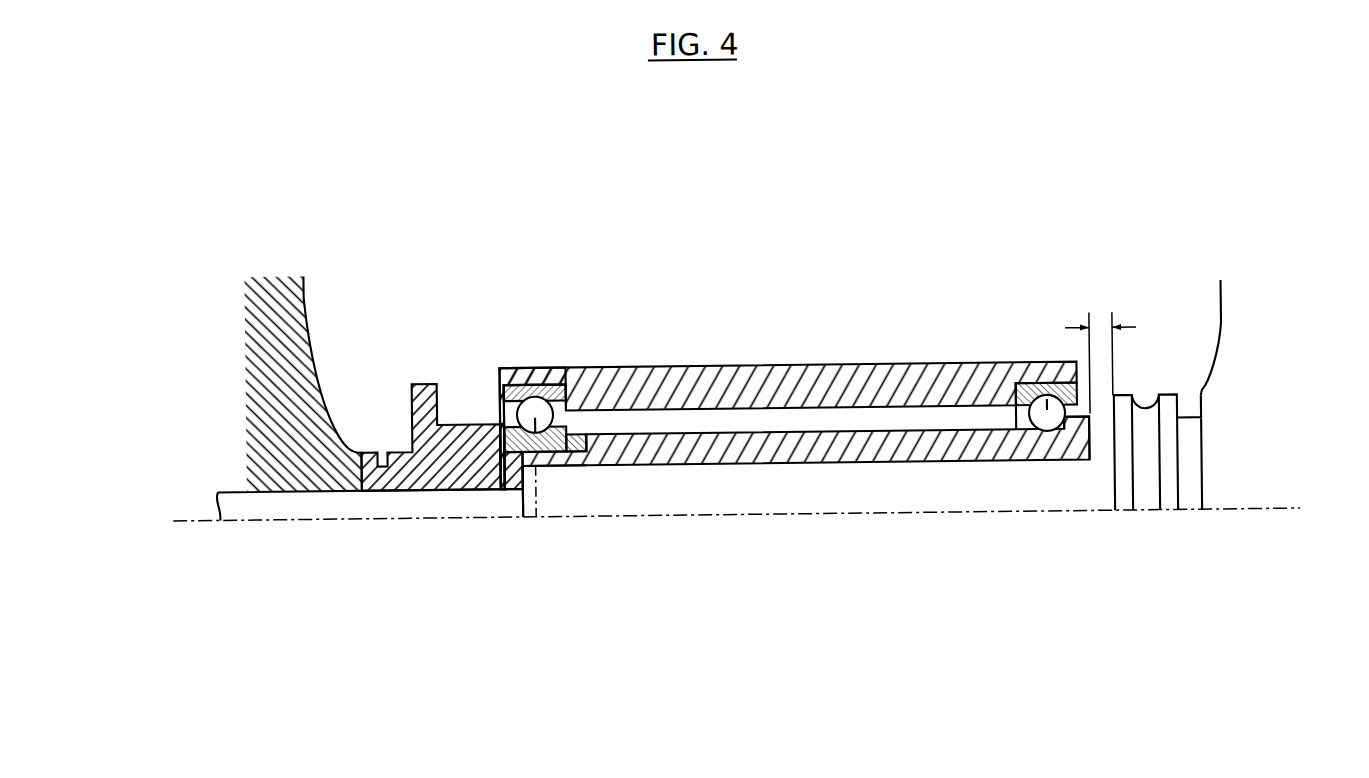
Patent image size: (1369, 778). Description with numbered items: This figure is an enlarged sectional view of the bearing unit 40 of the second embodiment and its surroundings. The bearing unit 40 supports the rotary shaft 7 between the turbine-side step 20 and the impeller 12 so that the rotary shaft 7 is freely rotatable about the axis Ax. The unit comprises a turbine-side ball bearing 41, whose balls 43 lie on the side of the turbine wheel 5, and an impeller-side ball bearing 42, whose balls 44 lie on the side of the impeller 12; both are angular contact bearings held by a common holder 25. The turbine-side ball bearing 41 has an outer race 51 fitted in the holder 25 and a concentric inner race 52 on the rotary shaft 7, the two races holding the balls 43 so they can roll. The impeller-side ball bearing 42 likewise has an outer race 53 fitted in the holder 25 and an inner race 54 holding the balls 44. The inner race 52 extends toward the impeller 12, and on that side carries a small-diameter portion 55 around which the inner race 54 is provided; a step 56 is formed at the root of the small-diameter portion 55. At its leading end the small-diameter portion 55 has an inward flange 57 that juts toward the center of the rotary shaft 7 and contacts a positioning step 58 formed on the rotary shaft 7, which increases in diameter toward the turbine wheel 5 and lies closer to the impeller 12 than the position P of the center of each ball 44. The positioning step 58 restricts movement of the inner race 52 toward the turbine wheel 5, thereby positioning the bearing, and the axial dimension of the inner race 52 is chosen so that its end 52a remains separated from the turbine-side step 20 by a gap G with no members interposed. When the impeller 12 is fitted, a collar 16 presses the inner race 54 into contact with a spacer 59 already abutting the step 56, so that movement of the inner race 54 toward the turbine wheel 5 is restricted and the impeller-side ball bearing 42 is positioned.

The turbine wheel 5 is at (1221, 330).
The rotary shaft 7 is at (723, 480).
The impeller 12 is at (307, 301).
The collar 16 is at (397, 449).
The turbine-side step 20 is at (1113, 450).
The holder 25 is at (772, 368).
The bearing unit 40 is at (845, 216).
The turbine-side ball bearing 41 is at (1053, 390).
The impeller-side ball bearing 42 is at (537, 384).
The balls 43 is at (1048, 390).
The balls 44 is at (548, 385).
The outer race 51 is at (1020, 385).
The inner race 52 is at (945, 455).
The end 52a is at (1093, 440).
The outer race 53 is at (505, 367).
The inner race 54 is at (501, 425).
The small-diameter portion 55 is at (560, 466).
The step 56 is at (586, 435).
The inward flange 57 is at (510, 493).
The positioning step 58 is at (523, 504).
The spacer 59 is at (570, 411).
The gap G is at (1101, 347).
The position of the center of each ball P is at (538, 500).
The axis Ax is at (182, 517).